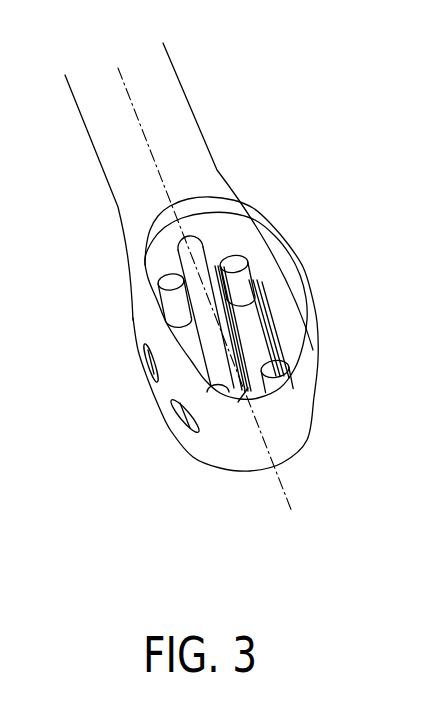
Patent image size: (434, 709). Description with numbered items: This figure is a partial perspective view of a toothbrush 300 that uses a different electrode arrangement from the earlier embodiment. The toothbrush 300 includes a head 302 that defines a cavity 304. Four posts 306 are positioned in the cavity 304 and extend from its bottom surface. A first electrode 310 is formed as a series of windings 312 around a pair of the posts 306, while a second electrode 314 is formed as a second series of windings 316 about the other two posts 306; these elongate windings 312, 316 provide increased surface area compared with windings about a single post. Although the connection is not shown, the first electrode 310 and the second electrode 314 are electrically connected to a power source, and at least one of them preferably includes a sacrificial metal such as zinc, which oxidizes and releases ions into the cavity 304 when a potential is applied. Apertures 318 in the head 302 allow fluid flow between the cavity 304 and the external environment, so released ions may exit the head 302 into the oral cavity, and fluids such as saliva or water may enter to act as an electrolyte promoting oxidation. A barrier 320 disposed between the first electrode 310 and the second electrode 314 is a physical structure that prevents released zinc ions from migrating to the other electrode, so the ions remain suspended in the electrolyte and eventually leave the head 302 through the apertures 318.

The toothbrush 300 is at (226, 142).
The head 302 is at (302, 469).
The cavity 304 is at (213, 237).
The posts 306 is at (233, 268).
The first electrode 310 is at (172, 332).
The windings 312 is at (186, 337).
The second electrode 314 is at (286, 323).
The second series of windings 316 is at (263, 305).
The apertures 318 is at (147, 345).
The barrier 320 is at (245, 405).